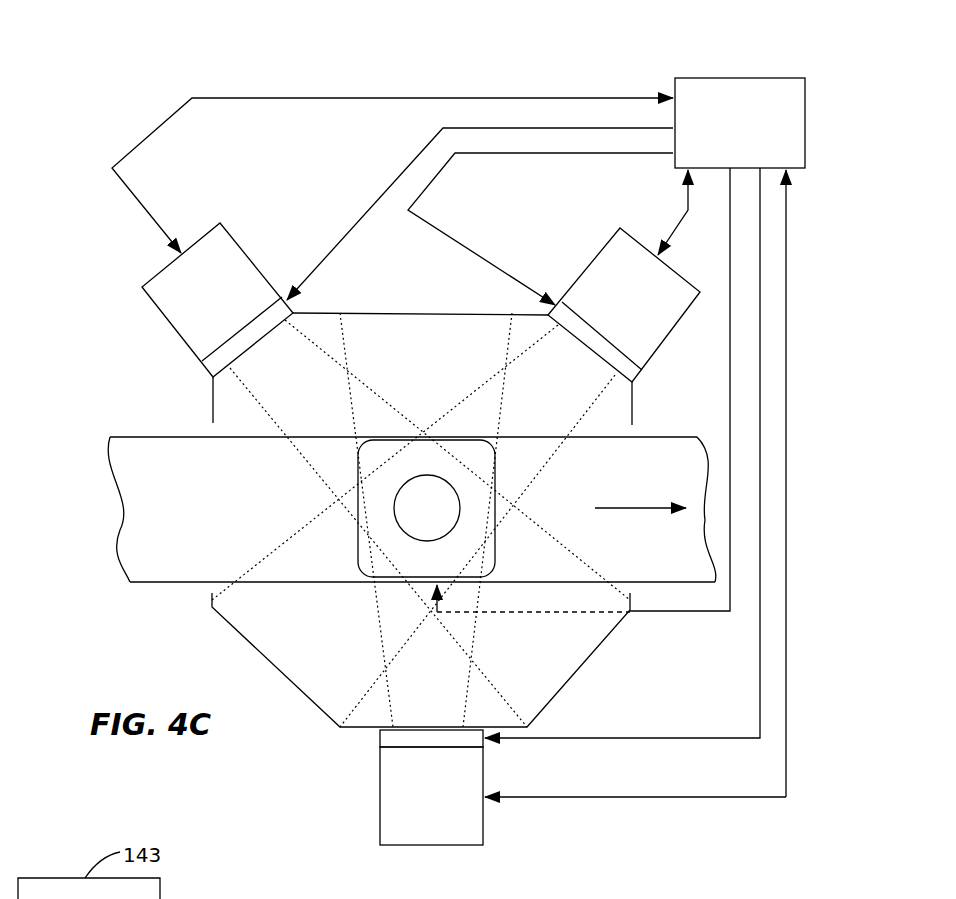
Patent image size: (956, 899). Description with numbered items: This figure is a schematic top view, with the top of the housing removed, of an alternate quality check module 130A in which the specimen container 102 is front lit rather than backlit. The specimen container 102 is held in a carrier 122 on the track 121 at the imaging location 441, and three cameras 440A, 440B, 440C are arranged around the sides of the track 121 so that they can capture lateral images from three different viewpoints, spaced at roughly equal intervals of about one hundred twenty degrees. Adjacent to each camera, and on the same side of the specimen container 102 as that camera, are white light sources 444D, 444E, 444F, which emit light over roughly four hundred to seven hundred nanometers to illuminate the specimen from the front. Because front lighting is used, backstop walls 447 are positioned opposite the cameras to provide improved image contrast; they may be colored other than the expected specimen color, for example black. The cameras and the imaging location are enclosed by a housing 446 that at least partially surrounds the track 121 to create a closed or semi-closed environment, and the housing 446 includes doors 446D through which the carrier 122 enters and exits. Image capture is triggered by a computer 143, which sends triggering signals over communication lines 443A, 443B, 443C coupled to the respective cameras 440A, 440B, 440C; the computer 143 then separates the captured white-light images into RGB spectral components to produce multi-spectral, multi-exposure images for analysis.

The quality check module 130A is at (265, 65).
The computer 143 is at (732, 78).
The communication line 443B is at (297, 99).
The communication line 443C is at (688, 208).
The communication line 443A is at (788, 300).
The camera 440B is at (243, 247).
The camera 440C is at (583, 270).
The camera 440A is at (380, 800).
The light source 444E is at (200, 364).
The light source 444F is at (634, 380).
The light source 444D is at (380, 740).
The backstop wall 447 is at (430, 313).
The housing 446 is at (600, 648).
The door 446D is at (208, 588).
The track 121 is at (193, 523).
The carrier 122 is at (358, 473).
The specimen container 102 is at (392, 507).
The imaging location 441 is at (464, 504).